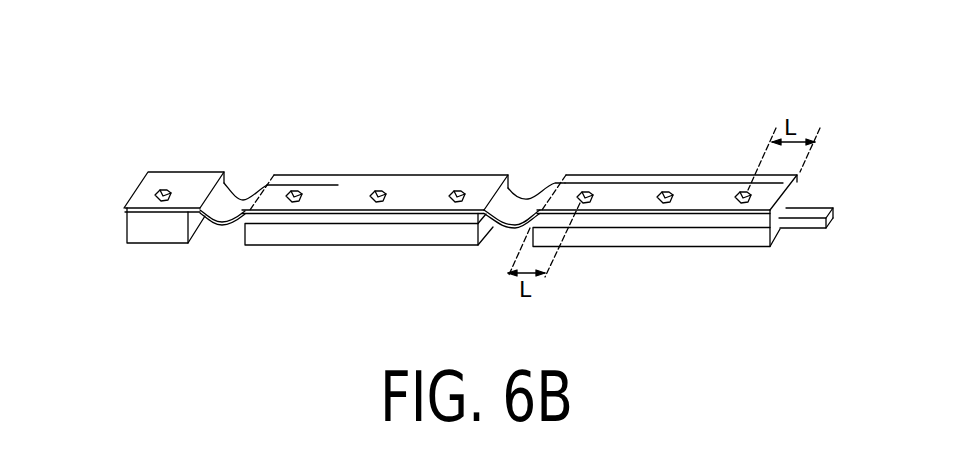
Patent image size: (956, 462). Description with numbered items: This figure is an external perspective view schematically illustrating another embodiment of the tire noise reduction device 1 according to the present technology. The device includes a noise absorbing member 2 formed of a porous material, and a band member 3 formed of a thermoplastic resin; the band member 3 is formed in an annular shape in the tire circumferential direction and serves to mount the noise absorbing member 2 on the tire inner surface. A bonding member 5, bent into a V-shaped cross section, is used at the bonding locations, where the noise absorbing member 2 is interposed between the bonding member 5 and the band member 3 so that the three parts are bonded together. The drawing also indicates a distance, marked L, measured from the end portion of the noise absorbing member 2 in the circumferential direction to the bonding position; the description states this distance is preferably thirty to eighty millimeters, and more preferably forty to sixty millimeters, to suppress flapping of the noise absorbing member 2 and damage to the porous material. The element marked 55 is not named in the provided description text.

The tire noise reduction device 1 is at (506, 142).
The noise absorbing member 2 is at (323, 241).
The band member 3 is at (203, 222).
The bonding member 5 is at (290, 190).
The plate 55 is at (480, 175).